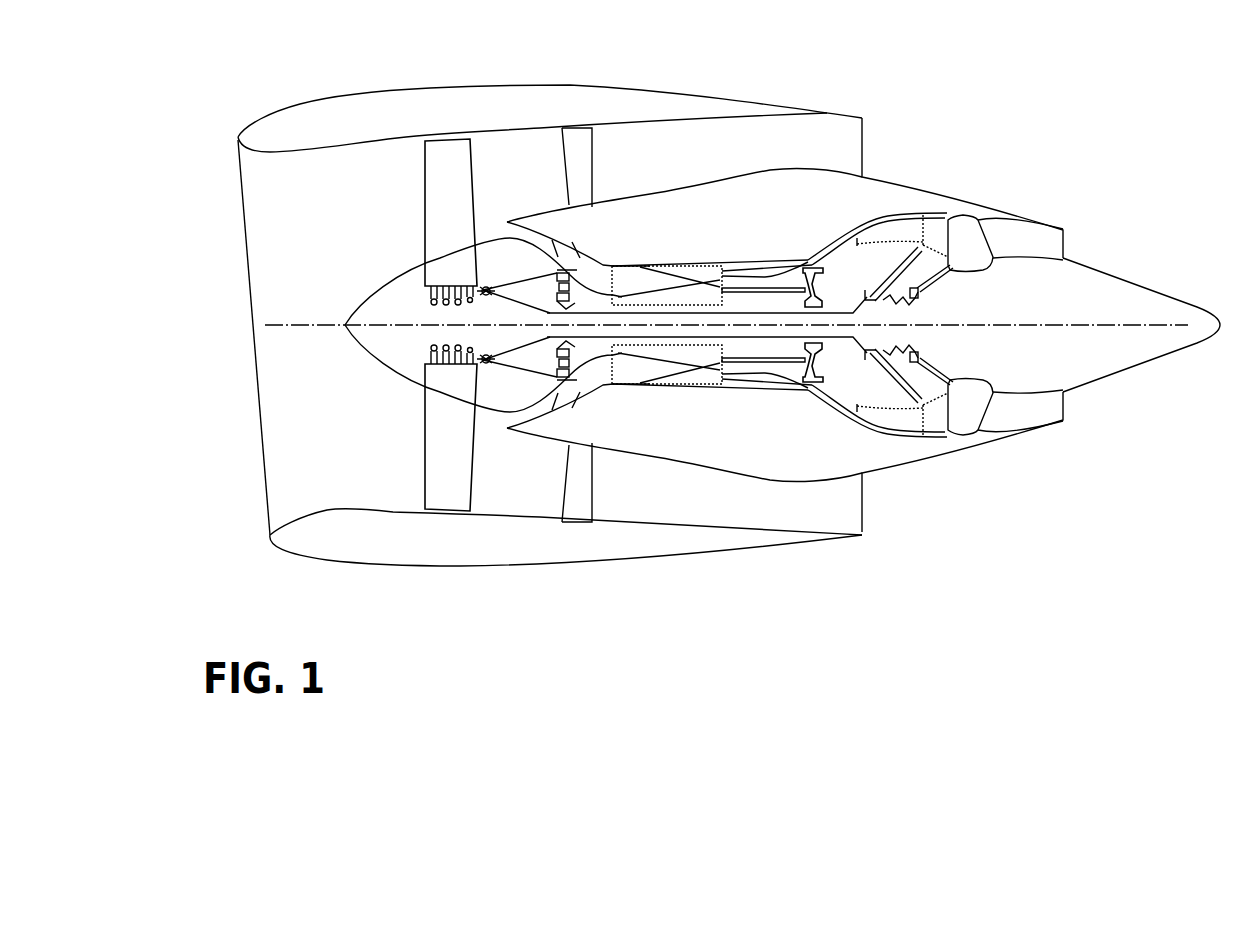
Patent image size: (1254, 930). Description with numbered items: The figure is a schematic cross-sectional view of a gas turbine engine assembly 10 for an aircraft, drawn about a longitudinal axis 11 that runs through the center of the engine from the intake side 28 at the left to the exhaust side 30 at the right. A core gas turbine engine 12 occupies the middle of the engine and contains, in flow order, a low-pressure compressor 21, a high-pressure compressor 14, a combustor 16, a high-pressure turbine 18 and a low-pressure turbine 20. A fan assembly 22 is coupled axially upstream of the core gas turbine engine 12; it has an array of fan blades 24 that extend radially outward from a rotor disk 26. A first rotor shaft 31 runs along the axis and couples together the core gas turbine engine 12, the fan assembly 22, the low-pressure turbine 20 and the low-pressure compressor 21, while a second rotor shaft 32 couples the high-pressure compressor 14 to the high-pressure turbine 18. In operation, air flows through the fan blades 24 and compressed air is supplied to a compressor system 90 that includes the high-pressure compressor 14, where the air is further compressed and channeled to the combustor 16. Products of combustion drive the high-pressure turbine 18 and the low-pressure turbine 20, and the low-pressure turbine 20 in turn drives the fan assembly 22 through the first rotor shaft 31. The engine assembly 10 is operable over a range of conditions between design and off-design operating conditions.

The gas turbine engine assembly 10 is at (774, 62).
The longitudinal axis 11 is at (283, 320).
The core gas turbine engine 12 is at (700, 257).
The high-pressure compressor 14 is at (637, 278).
The combustor 16 is at (778, 273).
The high-pressure turbine 18 is at (818, 266).
The low-pressure turbine 20 is at (893, 232).
The low-pressure compressor 21 is at (580, 257).
The fan assembly 22 is at (408, 438).
The fan blades 24 is at (443, 197).
The rotor disk 26 is at (452, 380).
The intake side 28 is at (222, 170).
The exhaust side 30 is at (882, 147).
The first rotor shaft 31 is at (747, 313).
The second rotor shaft 32 is at (782, 380).
The compressor system 90 is at (632, 253).